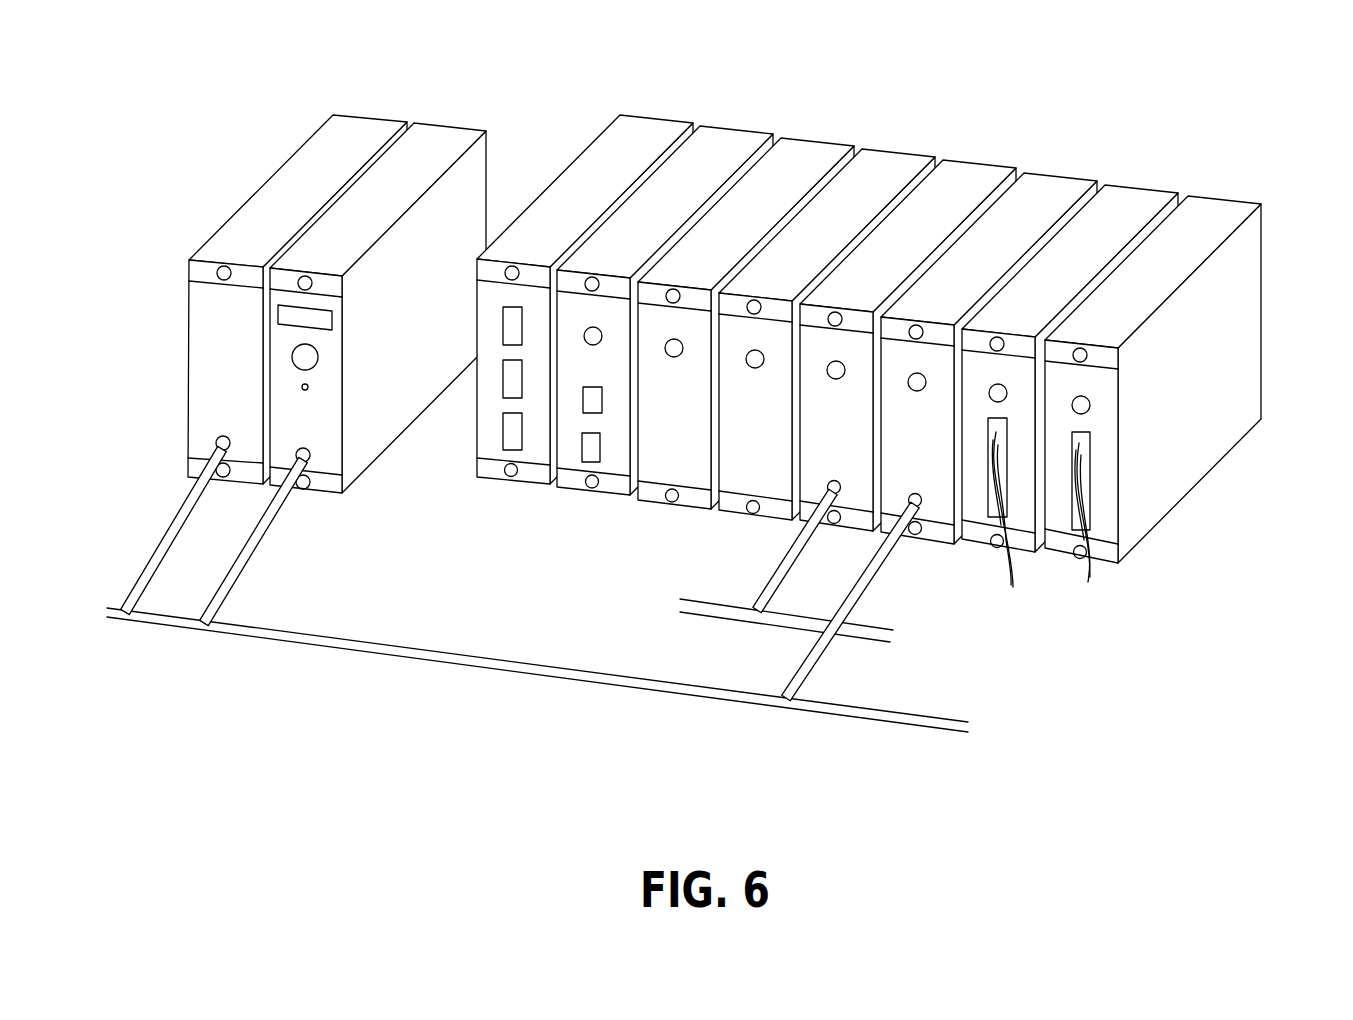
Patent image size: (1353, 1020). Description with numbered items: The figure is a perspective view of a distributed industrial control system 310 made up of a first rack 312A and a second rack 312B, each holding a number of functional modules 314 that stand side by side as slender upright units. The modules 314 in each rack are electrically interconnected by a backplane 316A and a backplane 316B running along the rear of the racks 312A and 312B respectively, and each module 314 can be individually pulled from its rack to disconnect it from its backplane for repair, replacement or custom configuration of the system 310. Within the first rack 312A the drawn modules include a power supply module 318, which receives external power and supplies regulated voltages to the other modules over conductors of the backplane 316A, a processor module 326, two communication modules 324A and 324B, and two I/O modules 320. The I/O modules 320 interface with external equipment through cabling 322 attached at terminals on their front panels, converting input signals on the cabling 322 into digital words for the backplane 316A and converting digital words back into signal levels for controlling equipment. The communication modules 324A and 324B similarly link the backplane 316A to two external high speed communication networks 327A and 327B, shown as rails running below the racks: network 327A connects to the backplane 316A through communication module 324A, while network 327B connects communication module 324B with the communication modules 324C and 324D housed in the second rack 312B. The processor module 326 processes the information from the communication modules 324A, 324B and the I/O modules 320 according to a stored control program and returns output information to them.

The distributed industrial control system 310 is at (727, 435).
The first rack 312A is at (1152, 490).
The second rack 312B is at (443, 383).
The functional module 314 is at (288, 283).
The backplane 316A is at (887, 362).
The backplane 316B is at (357, 276).
The power supply module 318 is at (492, 450).
The I/O module 320 is at (1017, 400).
The cabling 322 is at (1013, 587).
The communication module 324A is at (847, 357).
The communication module 324B is at (937, 363).
The communication module 324C is at (208, 407).
The communication module 324D is at (378, 325).
The processor module 326 is at (573, 460).
The high speed communication network 327A is at (689, 599).
The high speed communication network 327B is at (358, 641).